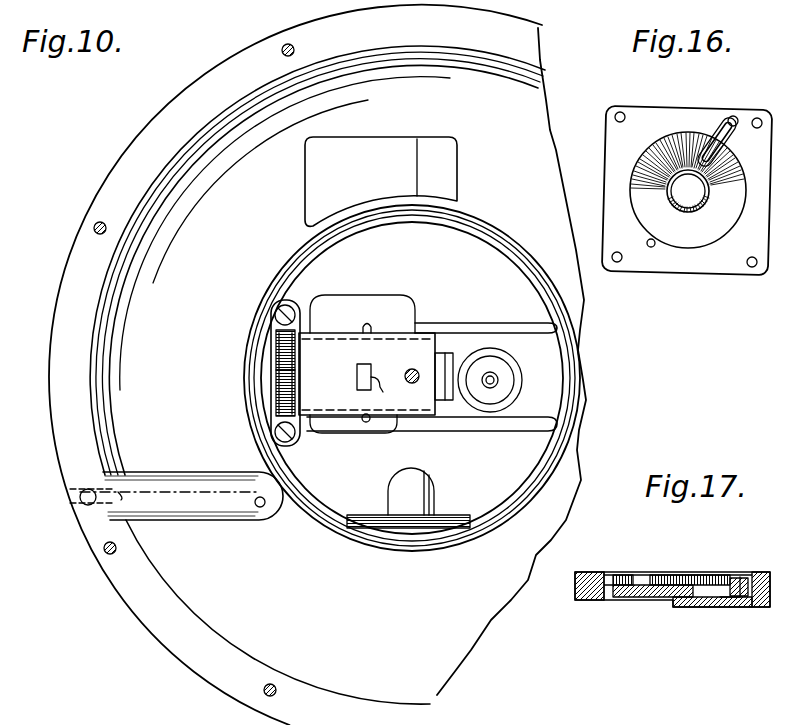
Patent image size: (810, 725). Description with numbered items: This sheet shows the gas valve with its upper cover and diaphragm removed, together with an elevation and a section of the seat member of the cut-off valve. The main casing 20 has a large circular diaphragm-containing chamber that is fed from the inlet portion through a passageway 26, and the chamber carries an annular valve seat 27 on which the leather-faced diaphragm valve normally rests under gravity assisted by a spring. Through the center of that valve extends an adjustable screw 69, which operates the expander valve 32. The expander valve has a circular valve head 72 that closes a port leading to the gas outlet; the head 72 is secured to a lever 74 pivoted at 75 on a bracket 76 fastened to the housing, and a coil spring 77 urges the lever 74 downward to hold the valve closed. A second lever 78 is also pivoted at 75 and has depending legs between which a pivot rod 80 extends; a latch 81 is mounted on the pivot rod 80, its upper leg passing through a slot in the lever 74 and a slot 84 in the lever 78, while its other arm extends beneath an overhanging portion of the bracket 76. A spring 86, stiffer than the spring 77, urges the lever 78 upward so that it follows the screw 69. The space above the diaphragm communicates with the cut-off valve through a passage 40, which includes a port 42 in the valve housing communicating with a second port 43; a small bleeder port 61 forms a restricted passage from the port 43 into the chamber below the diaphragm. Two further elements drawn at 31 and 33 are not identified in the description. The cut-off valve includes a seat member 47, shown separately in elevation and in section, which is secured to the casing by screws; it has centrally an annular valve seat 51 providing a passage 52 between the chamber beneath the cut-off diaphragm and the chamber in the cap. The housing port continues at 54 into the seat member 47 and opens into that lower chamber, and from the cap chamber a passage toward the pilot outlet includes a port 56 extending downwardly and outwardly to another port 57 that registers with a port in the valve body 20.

In FIG. 10, the casing 20 is at (113, 413).
In FIG. 10, the passageway 26 is at (360, 155).
In FIG. 10, the annular valve seat 27 is at (443, 538).
In FIG. 10, the inner ring 31 is at (345, 493).
In FIG. 10, the expander valve 32 is at (528, 361).
In FIG. 10, the lower bracket 33 is at (328, 420).
In FIG. 10, the passage 40 is at (67, 508).
In FIG. 10, the port 42 is at (86, 505).
In FIG. 10, the second port 43 is at (197, 505).
In FIG. 16, the valve seat member 47 is at (613, 142).
In FIG. 17, the valve seat member 47 is at (587, 601).
In FIG. 16, the annular valve seat 51 is at (708, 190).
In FIG. 17, the annular valve seat 51 is at (688, 603).
In FIG. 16, the passage 52 is at (667, 191).
In FIG. 17, the passage 52 is at (653, 601).
In FIG. 16, the port 54 is at (650, 248).
In FIG. 17, the port 54 is at (607, 577).
In FIG. 16, the port 56 is at (706, 150).
In FIG. 17, the port 56 is at (716, 605).
In FIG. 16, the port 57 is at (734, 116).
In FIG. 17, the port 57 is at (753, 585).
In FIG. 10, the bleeder port 61 is at (122, 495).
In FIG. 10, the adjustable screw 69 is at (411, 370).
In FIG. 10, the valve head 72 is at (510, 381).
In FIG. 10, the lever 74 is at (455, 350).
In FIG. 10, the pivot 75 is at (273, 378).
In FIG. 10, the bracket 76 is at (273, 362).
In FIG. 10, the coil spring 77 is at (273, 405).
In FIG. 10, the second lever 78 is at (412, 340).
In FIG. 10, the pivot rod 80 is at (369, 330).
In FIG. 10, the latch 81 is at (385, 392).
In FIG. 10, the slot 84 is at (357, 373).
In FIG. 10, the spring 86 is at (280, 350).